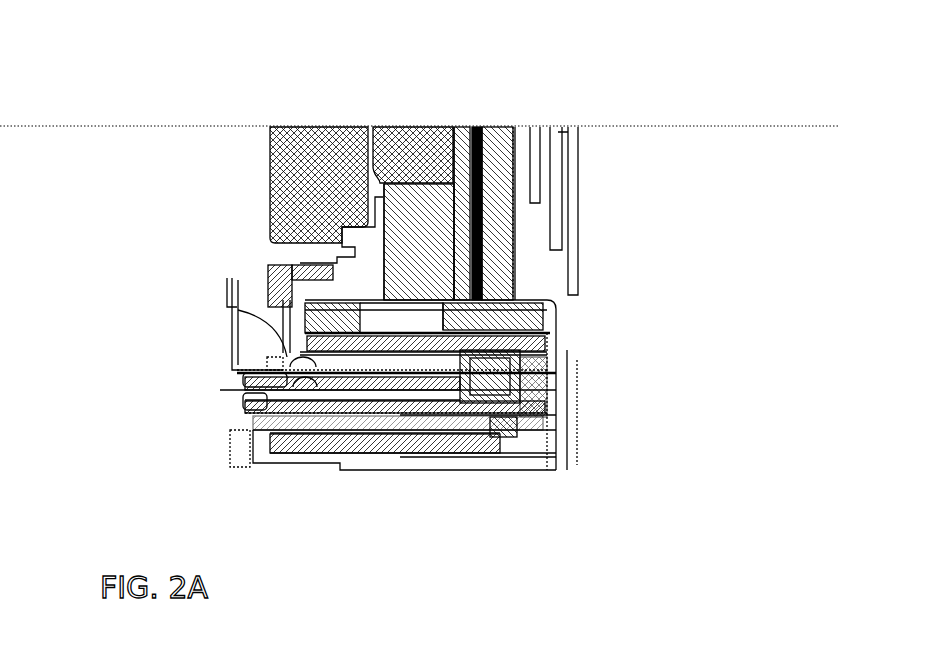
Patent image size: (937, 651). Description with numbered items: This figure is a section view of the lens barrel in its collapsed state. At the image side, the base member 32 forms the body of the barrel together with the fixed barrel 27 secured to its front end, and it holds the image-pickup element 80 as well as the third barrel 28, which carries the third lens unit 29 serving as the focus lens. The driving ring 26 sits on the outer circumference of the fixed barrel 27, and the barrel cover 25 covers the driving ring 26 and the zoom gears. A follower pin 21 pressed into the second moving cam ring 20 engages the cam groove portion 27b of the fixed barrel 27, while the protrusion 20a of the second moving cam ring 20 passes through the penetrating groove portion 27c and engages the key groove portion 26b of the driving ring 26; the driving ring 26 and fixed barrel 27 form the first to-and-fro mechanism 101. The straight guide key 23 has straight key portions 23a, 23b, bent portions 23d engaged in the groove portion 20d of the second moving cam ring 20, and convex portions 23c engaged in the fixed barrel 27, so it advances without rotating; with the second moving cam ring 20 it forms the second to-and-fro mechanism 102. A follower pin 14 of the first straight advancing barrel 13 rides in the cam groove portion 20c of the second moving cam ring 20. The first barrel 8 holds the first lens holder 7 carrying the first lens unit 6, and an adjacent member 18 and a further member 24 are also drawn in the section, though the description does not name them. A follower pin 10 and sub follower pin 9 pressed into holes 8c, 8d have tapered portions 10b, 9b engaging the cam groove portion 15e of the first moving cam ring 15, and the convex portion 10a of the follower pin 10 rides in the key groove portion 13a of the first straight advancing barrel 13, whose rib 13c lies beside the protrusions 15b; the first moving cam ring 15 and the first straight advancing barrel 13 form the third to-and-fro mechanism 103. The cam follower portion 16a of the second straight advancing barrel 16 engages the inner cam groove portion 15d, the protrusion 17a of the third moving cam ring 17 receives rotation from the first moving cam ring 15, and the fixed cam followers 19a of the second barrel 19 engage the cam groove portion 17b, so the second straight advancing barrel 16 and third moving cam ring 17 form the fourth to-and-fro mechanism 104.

The first lens unit 6 is at (279, 126).
The first lens holder 7 is at (313, 255).
The first barrel 8 is at (242, 304).
The hole 8c is at (430, 372).
The hole 8d is at (430, 355).
The sub follower pin 9 is at (395, 345).
The tapered portion 9b is at (370, 350).
The follower pin 10 is at (418, 345).
The convex portion 10a is at (440, 365).
The tapered portion 10b is at (470, 385).
The first straight advancing barrel 13 is at (232, 345).
The key groove portion 13a is at (330, 360).
The rib 13c is at (570, 350).
The follower pin 14 is at (404, 426).
The first moving cam ring 15 is at (335, 297).
The protrusions 15b is at (475, 400).
The cam groove portion 15d is at (257, 305).
The cam groove portion 15e is at (450, 340).
The second straight advancing barrel 16 is at (300, 312).
The cam follower portion 16a is at (104, 277).
The third moving cam ring 17 is at (345, 312).
The protrusion 17a is at (345, 355).
The cam groove portion 17b is at (560, 345).
The block 18 is at (397, 127).
The second barrel 19 is at (458, 127).
The fixed cam followers 19a is at (535, 283).
The second moving cam ring 20 is at (237, 385).
The protrusion 20a is at (470, 470).
The cam groove portion 20c is at (556, 430).
The groove portion 20d is at (565, 400).
The follower pin 21 is at (432, 617).
The straight guide key 23 is at (556, 350).
The straight key portion 23a is at (300, 372).
The straight key portion 23b is at (552, 333).
The convex portions 23c is at (556, 433).
The bent portions 23d is at (556, 402).
The bracket 24 is at (245, 470).
The barrel cover 25 is at (460, 380).
The driving ring 26 is at (520, 440).
The key groove portion 26b is at (547, 467).
The fixed barrel 27 is at (558, 450).
The cam groove portion 27b is at (465, 385).
The penetrating groove portion 27c is at (508, 450).
The third barrel 28 is at (568, 298).
The third lens unit 29 is at (500, 130).
The base member 32 is at (457, 295).
The image-pickup element 80 is at (545, 127).
The first to-and-fro mechanism 101 is at (700, 455).
The second to-and-fro mechanism 102 is at (780, 342).
The third to-and-fro mechanism 103 is at (115, 323).
The fourth to-and-fro mechanism 104 is at (118, 243).